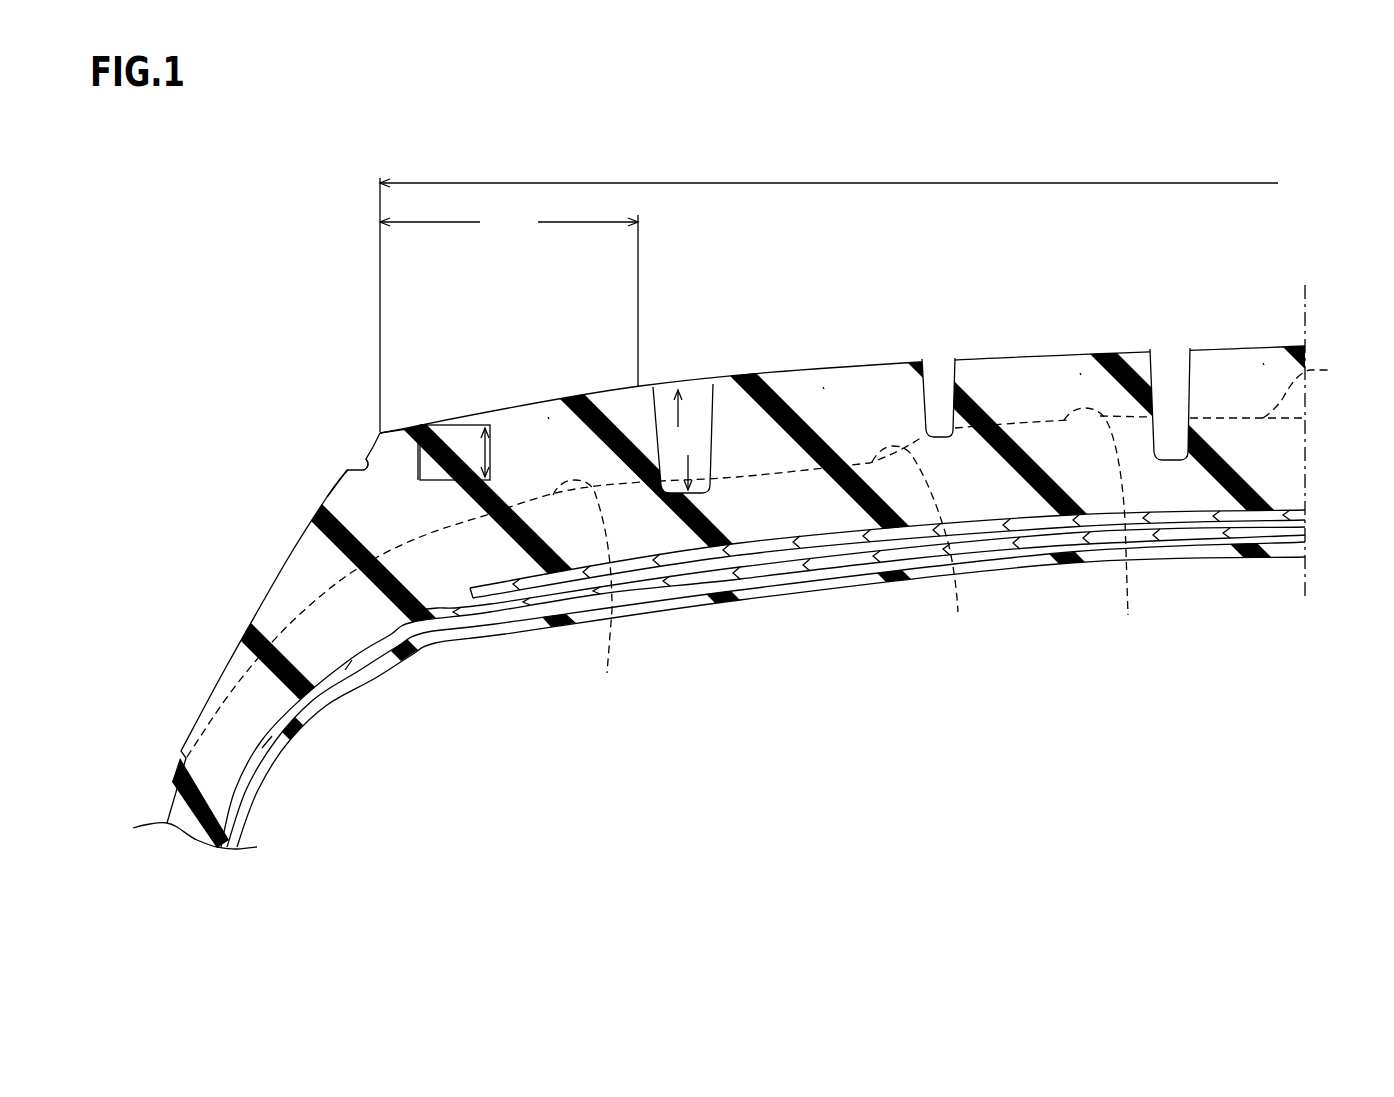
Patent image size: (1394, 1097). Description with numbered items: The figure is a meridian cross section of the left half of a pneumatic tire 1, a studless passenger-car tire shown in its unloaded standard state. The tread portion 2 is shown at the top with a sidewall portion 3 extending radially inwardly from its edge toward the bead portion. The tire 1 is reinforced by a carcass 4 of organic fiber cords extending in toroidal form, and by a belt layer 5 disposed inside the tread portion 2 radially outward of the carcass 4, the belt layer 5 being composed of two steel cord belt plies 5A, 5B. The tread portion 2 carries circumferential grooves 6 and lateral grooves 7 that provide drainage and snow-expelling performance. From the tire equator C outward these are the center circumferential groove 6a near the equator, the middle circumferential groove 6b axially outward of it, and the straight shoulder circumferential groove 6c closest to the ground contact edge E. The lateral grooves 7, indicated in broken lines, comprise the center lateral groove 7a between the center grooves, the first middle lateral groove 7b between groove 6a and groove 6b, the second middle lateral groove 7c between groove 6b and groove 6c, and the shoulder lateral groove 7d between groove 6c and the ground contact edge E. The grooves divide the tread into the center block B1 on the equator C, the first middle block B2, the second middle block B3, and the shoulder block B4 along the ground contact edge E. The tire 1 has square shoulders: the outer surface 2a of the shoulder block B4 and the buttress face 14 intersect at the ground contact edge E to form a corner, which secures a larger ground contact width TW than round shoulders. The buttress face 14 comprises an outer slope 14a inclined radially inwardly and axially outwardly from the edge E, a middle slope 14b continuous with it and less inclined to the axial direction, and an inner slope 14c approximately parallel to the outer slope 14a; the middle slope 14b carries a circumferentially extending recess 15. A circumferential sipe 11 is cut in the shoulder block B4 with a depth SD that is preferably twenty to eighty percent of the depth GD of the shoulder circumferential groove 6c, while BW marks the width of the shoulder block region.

The pneumatic tire 1 is at (310, 298).
The tread portion 2 is at (842, 312).
The outer surface of shoulder blocks 2a is at (482, 410).
The sidewall portion 3 is at (163, 775).
The carcass 4 is at (350, 660).
The belt layer 5 is at (857, 636).
The steel cord belt ply 5A is at (758, 557).
The steel cord belt ply 5B is at (850, 535).
The circumferential grooves 6 is at (924, 363).
The center circumferential groove 6a is at (1173, 373).
The middle circumferential groove 6b is at (937, 380).
The shoulder circumferential groove 6c is at (678, 383).
The lateral grooves 7 is at (790, 556).
The center lateral groove 7a is at (1328, 386).
The first middle lateral groove 7b is at (1112, 533).
The second middle lateral groove 7c is at (929, 567).
The shoulder lateral groove 7d is at (595, 594).
The circumferential sipe 11 is at (404, 430).
The buttress face 14 is at (264, 427).
The outer slope 14a is at (379, 431).
The middle slope 14b is at (367, 460).
The inner slope 14c is at (327, 497).
The recess 15 is at (371, 470).
The ground contact edge E is at (378, 430).
The tire equator C is at (1305, 424).
The ground contact width TW is at (853, 183).
The shoulder block width BW is at (509, 297).
The depth of circumferential sipe SD is at (472, 452).
The depth of shoulder circumferential groove GD is at (685, 440).
The center block B1 is at (1263, 363).
The first middle block B2 is at (1080, 373).
The second middle block B3 is at (823, 387).
The shoulder block B4 is at (548, 417).